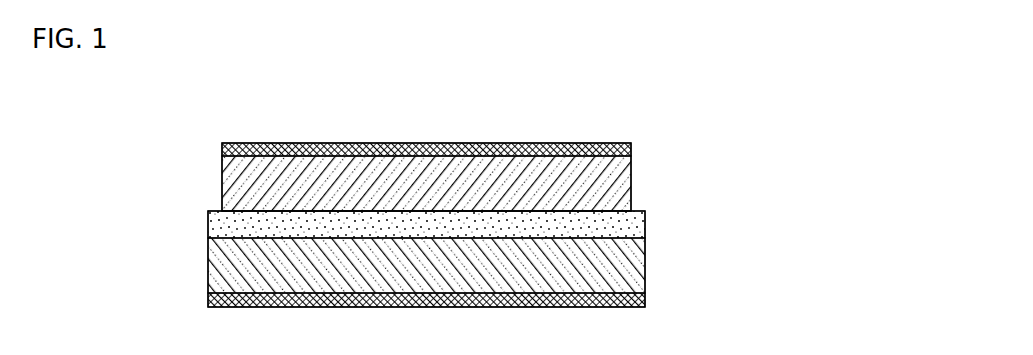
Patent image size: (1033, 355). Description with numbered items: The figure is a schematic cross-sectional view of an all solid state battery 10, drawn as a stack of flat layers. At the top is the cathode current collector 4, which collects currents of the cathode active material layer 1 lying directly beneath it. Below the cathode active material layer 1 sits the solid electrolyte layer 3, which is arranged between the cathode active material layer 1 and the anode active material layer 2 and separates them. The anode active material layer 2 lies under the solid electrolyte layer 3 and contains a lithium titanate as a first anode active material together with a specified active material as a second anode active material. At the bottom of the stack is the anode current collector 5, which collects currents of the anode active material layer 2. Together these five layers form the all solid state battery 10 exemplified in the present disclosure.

The all solid state battery 10 is at (632, 100).
The cathode active material layer 1 is at (621, 184).
The anode active material layer 2 is at (633, 262).
The solid electrolyte layer 3 is at (633, 222).
The cathode current collector 4 is at (631, 144).
The anode current collector 5 is at (637, 298).